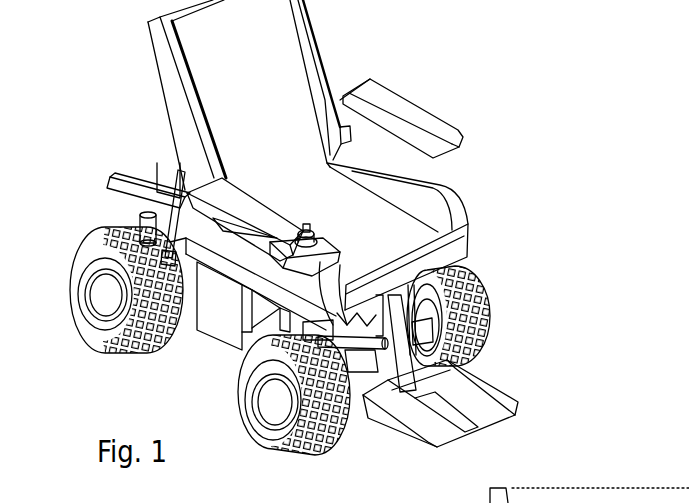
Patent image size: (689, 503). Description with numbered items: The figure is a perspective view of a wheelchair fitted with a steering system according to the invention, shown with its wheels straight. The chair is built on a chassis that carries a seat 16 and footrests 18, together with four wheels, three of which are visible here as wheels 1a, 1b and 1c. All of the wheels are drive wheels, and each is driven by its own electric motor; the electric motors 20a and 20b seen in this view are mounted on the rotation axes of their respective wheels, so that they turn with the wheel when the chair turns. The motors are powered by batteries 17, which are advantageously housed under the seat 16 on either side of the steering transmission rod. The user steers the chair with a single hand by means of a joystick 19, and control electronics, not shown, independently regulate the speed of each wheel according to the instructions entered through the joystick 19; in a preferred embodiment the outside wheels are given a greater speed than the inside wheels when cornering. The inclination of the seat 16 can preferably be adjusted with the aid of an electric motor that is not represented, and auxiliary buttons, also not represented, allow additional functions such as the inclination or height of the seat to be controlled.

The wheel 1a is at (310, 435).
The wheel 1b is at (481, 299).
The wheel 1c is at (118, 350).
The seat 16 is at (260, 84).
The batteries 17 is at (227, 328).
The footrests 18 is at (478, 398).
The joystick 19 is at (308, 222).
The electric motor 20a is at (355, 374).
The electric motor 20b is at (420, 335).